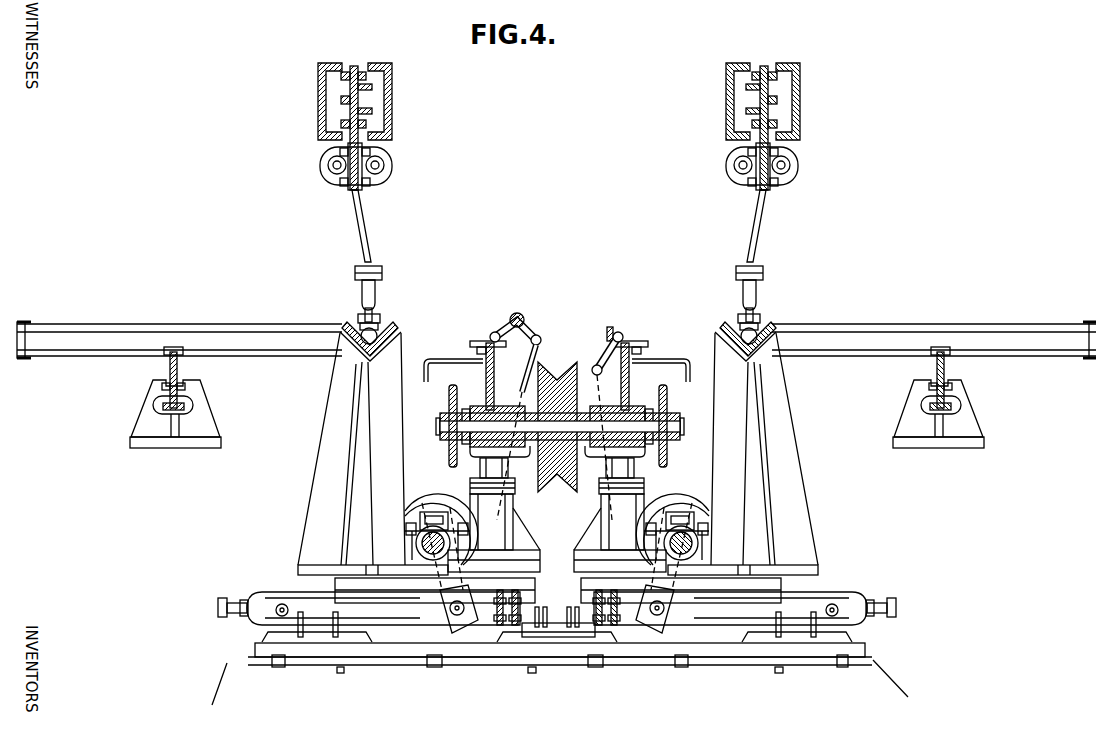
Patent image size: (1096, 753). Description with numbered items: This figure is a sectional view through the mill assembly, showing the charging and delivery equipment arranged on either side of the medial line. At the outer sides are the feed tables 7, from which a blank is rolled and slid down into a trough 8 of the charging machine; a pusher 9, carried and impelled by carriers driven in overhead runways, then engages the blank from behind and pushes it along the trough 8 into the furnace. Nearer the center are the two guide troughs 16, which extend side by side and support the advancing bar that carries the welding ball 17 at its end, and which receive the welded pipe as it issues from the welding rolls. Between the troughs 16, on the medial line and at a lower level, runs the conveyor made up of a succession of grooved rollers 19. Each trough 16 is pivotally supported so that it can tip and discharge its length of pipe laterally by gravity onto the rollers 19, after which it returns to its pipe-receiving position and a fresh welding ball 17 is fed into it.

The feed table 7 is at (204, 330).
The trough 8 is at (389, 324).
The pusher 9 is at (356, 320).
The guide trough 16 is at (533, 330).
The welding ball 17 is at (514, 312).
The grooved roller 19 is at (553, 480).